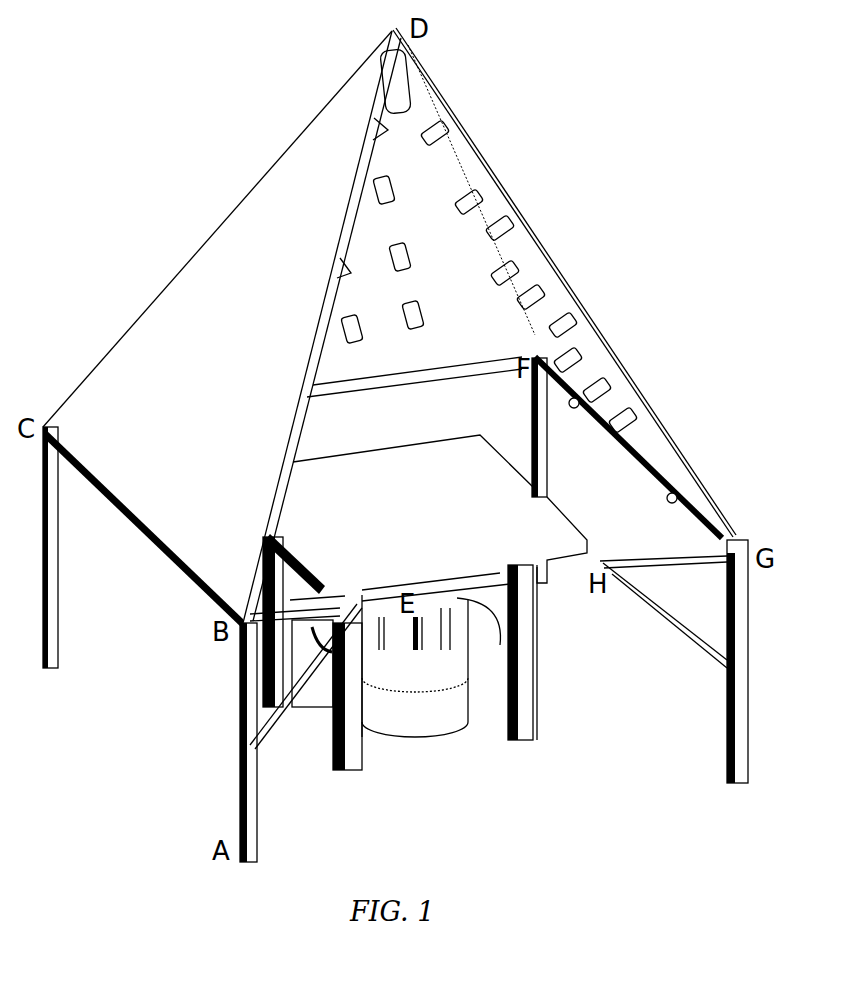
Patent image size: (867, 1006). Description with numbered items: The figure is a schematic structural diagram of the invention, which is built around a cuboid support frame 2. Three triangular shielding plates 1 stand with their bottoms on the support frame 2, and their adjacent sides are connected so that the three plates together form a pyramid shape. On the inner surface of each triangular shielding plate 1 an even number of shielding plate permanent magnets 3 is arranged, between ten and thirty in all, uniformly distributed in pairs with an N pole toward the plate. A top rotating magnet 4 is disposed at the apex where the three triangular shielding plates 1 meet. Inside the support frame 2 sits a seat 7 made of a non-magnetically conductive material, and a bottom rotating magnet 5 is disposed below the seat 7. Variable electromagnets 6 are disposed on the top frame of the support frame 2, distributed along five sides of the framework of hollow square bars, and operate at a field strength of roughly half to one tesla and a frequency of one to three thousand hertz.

The triangular shielding plate 1 is at (250, 250).
The support frame 2 is at (250, 747).
The permanent magnet 3 is at (556, 327).
The top rotating magnet 4 is at (397, 84).
The bottom rotating magnet 5 is at (428, 625).
The variable electromagnet 6 is at (578, 402).
The seat 7 is at (540, 544).